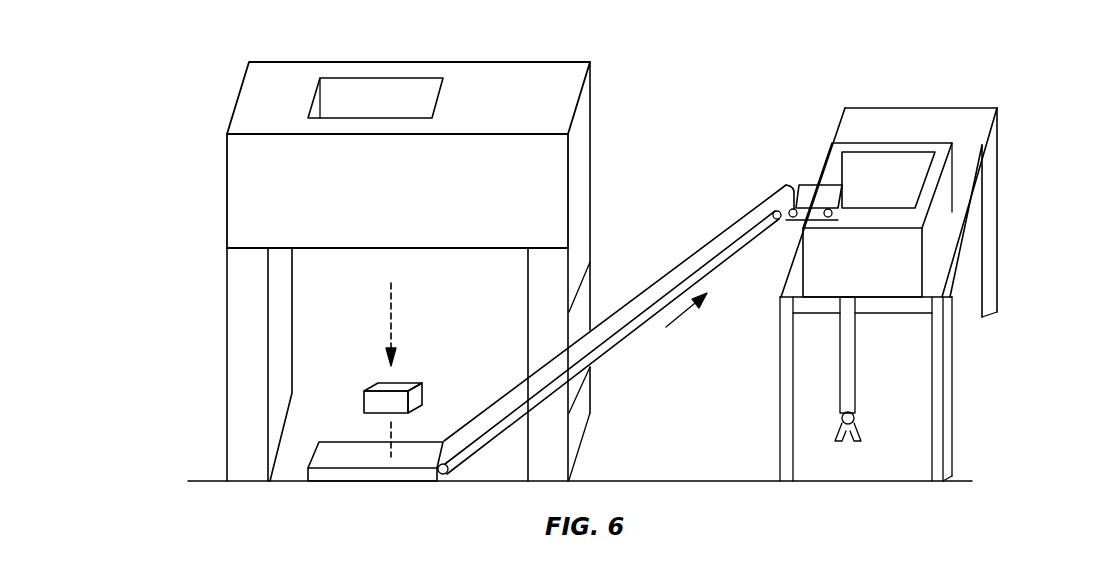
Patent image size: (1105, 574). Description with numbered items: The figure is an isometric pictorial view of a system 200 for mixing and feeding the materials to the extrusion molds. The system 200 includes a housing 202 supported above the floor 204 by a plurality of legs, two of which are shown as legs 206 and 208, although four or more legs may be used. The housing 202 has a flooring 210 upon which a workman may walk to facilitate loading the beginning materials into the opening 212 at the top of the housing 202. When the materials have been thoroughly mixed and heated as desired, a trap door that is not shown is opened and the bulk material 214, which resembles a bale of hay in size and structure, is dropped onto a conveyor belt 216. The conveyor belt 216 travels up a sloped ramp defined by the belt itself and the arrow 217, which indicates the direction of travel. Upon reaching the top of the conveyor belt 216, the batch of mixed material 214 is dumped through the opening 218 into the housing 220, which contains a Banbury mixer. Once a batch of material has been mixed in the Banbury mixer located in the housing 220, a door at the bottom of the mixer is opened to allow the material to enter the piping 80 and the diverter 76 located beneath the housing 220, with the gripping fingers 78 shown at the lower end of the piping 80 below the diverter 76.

The system 200 is at (712, 92).
The housing 202 is at (444, 271).
The floor 204 is at (213, 479).
The leg 206 is at (236, 322).
The leg 208 is at (595, 358).
The flooring 210 is at (248, 92).
The opening 212 is at (367, 90).
The bulk material 214 is at (425, 388).
The conveyor belt 216 is at (395, 455).
The arrow 217 is at (711, 322).
The opening 218 is at (879, 275).
The housing 220 is at (924, 212).
The piping 80 is at (876, 355).
The diverter 76 is at (877, 404).
The gripping fingers 78 is at (843, 466).